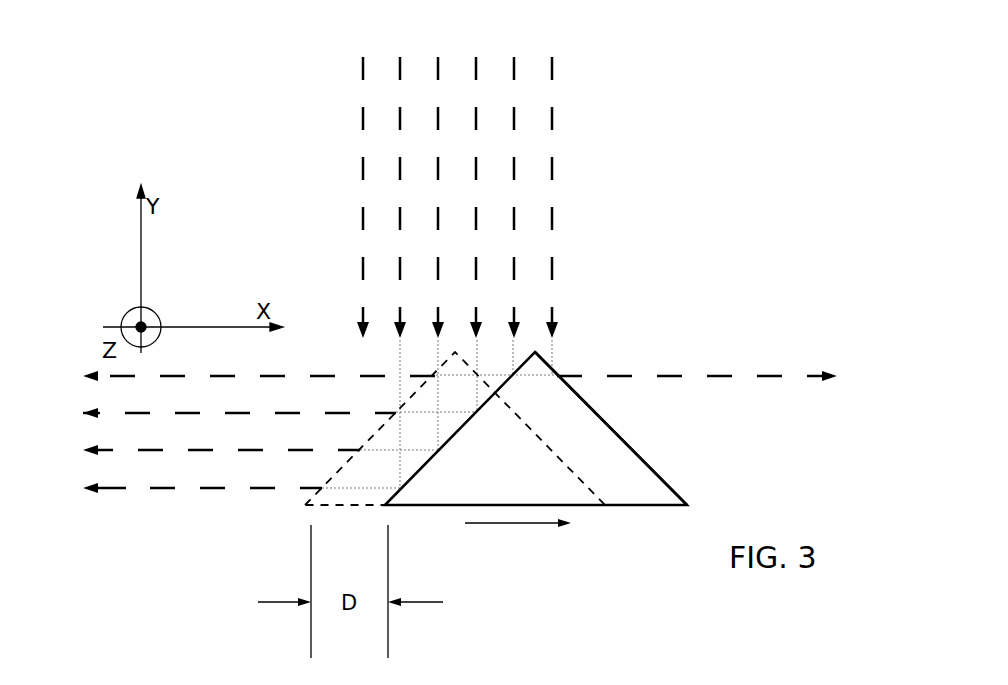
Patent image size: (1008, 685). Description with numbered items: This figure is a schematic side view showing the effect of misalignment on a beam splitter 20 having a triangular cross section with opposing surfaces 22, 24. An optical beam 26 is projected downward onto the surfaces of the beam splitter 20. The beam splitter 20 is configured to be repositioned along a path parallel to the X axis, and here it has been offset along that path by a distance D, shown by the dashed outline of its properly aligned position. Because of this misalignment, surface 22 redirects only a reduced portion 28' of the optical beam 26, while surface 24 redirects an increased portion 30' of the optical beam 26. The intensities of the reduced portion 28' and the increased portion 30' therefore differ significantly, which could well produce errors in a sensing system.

The beam splitter 20 is at (625, 506).
The surface 22 is at (663, 477).
The surface 24 is at (400, 488).
The optical beam 26 is at (514, 63).
The reduced portion 28' is at (732, 398).
The increased portion 30' is at (227, 432).